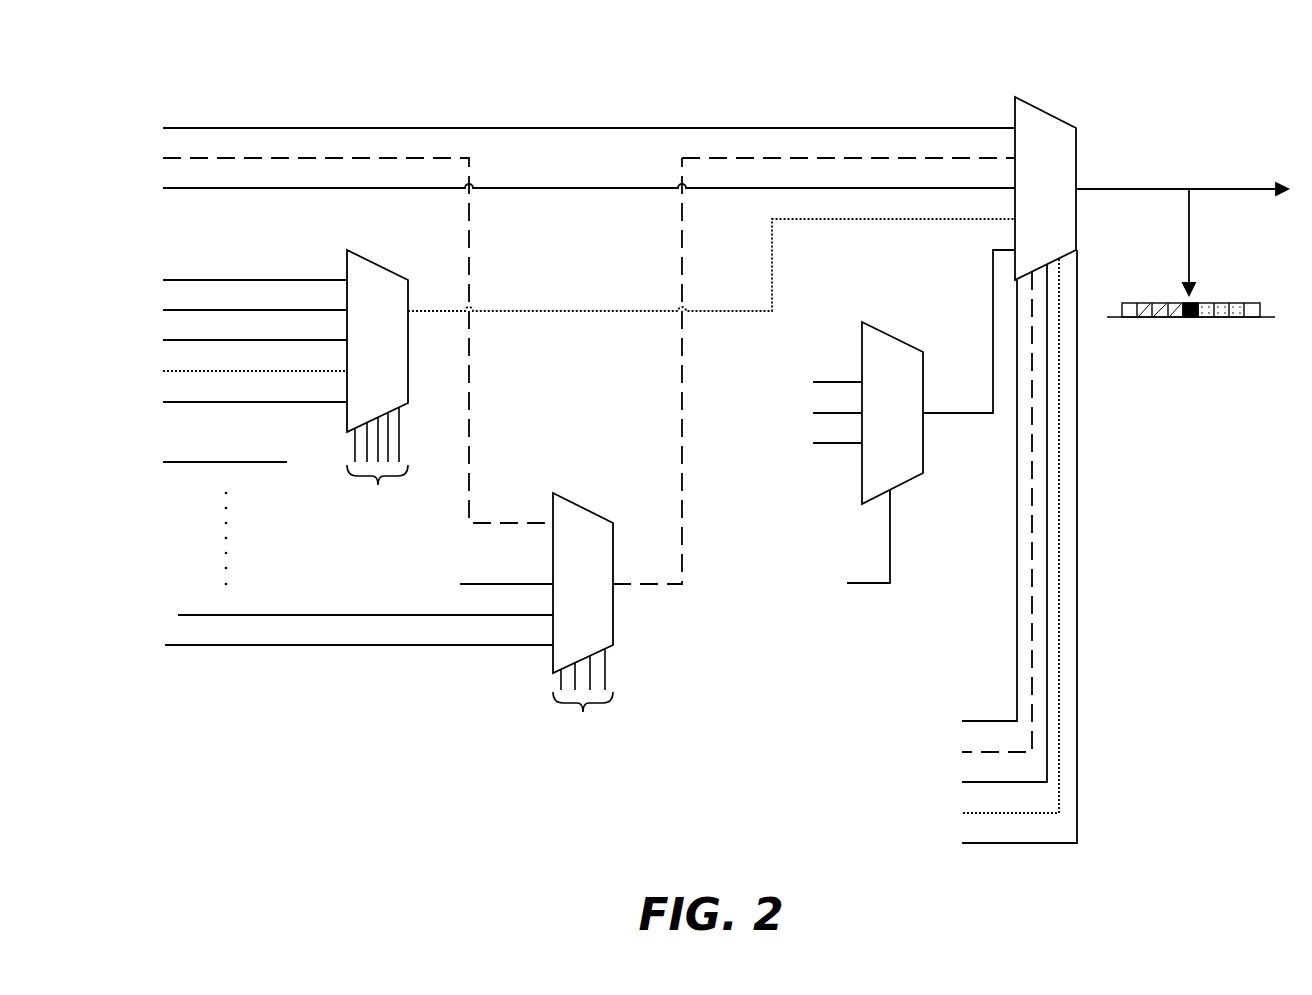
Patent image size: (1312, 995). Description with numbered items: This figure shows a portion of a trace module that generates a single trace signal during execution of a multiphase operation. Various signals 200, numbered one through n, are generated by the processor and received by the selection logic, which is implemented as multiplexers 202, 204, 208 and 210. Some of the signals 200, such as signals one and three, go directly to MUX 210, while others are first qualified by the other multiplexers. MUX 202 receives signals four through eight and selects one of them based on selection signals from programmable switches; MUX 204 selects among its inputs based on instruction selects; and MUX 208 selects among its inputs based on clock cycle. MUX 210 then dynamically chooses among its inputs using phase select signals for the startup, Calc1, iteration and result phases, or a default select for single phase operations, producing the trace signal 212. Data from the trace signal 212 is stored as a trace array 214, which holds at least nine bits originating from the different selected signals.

The signals 200 is at (188, 112).
The multiplexer 202 is at (667, 374).
The multiplexer 204 is at (571, 455).
The multiplexer 208 is at (881, 421).
The multiplexer 210 is at (957, 475).
The trace signal 212 is at (1182, 218).
The trace array 214 is at (1191, 336).